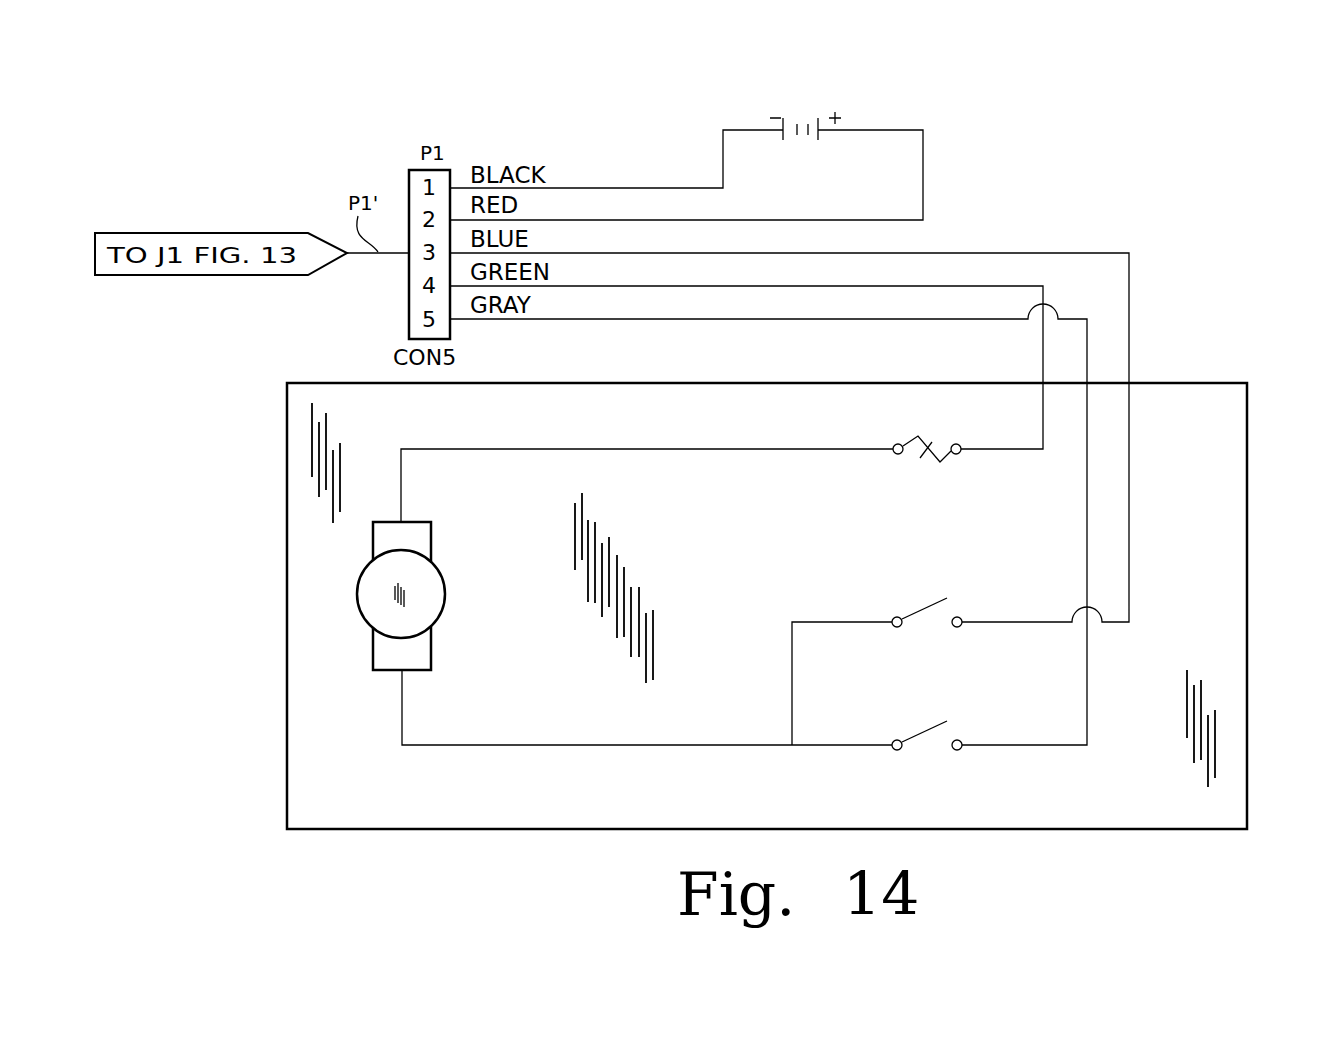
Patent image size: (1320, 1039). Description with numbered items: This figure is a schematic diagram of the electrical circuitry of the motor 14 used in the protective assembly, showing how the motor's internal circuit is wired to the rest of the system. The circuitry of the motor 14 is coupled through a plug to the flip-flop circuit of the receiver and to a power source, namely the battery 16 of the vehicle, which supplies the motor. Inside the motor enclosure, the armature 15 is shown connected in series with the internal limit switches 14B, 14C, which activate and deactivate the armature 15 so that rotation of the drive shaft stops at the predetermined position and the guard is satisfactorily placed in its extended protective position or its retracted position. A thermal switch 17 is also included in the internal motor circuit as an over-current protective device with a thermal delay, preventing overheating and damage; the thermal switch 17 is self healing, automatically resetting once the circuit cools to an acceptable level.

The motor 14 is at (1250, 410).
The internal limit switch 14B is at (893, 612).
The internal limit switch 14C is at (885, 760).
The armature 15 is at (445, 595).
The battery 16 is at (907, 118).
The thermal switch 17 is at (900, 428).